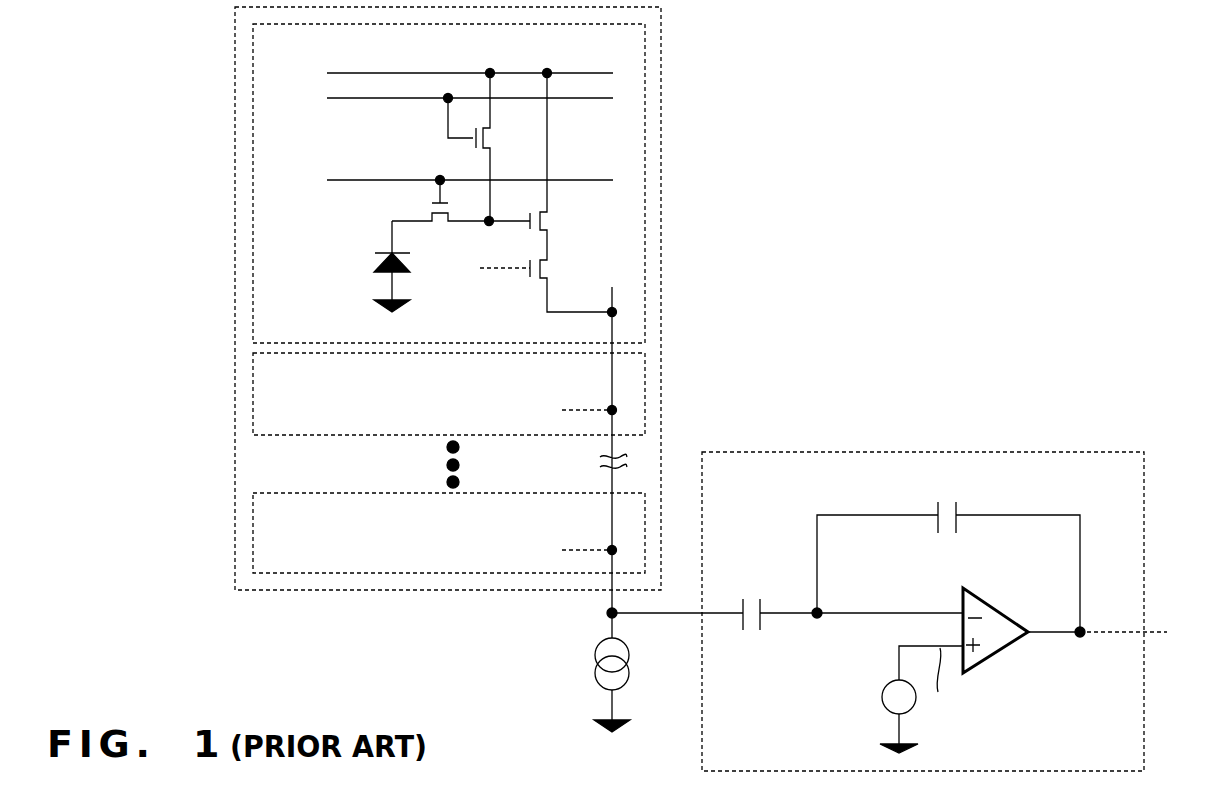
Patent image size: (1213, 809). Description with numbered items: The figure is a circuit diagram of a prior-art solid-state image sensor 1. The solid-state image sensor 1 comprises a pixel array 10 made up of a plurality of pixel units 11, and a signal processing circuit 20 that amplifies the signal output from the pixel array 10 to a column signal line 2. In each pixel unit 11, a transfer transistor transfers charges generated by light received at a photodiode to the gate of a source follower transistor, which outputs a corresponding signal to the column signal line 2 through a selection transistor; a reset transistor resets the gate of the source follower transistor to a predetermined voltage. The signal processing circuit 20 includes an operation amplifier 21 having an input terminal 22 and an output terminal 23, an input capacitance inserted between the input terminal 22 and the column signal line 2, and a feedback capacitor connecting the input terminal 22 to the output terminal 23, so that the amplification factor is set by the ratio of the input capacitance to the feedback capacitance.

The solid-state image sensor 1 is at (1072, 127).
The column signal line 2 is at (605, 613).
The pixel array 10 is at (661, 33).
The pixel unit 11 is at (645, 103).
The signal processing circuit 20 is at (1144, 495).
The operation amplifier 21 is at (990, 605).
The input terminal 22 is at (838, 618).
The output terminal 23 is at (1103, 636).